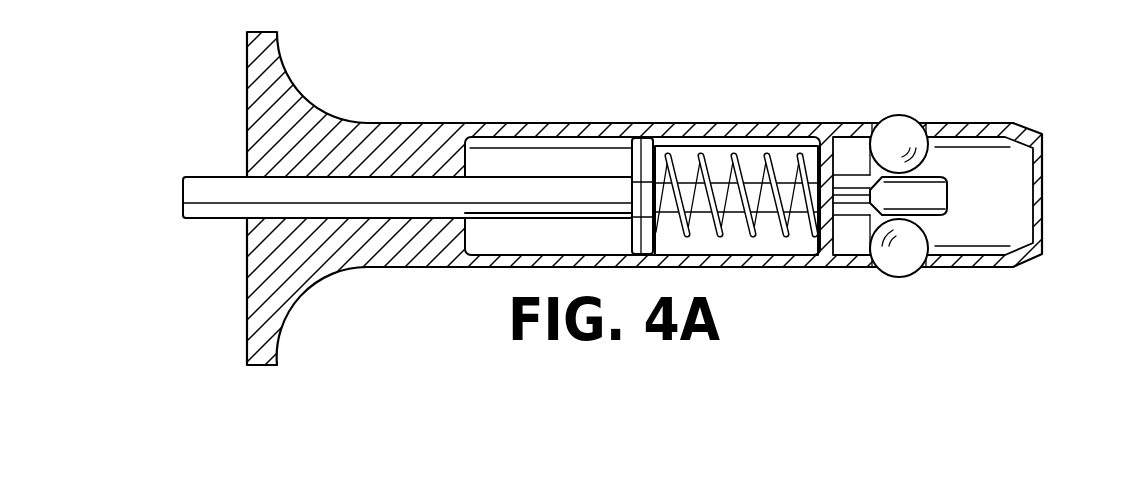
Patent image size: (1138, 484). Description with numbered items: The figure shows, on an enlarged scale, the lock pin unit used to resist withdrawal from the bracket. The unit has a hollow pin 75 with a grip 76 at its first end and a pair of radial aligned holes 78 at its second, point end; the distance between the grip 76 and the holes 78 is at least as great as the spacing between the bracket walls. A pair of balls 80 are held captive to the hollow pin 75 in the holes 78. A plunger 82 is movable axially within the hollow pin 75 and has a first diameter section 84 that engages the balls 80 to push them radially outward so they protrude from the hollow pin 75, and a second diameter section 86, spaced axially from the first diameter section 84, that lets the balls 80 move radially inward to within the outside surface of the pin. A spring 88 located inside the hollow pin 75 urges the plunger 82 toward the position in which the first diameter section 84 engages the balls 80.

The hollow pin 75 is at (533, 123).
The grip 76 is at (294, 86).
The radial aligned holes 78 is at (893, 118).
The balls 80 is at (912, 123).
The plunger 82 is at (218, 193).
The first diameter section 84 is at (950, 205).
The second diameter section 86 is at (846, 205).
The spring 88 is at (756, 150).